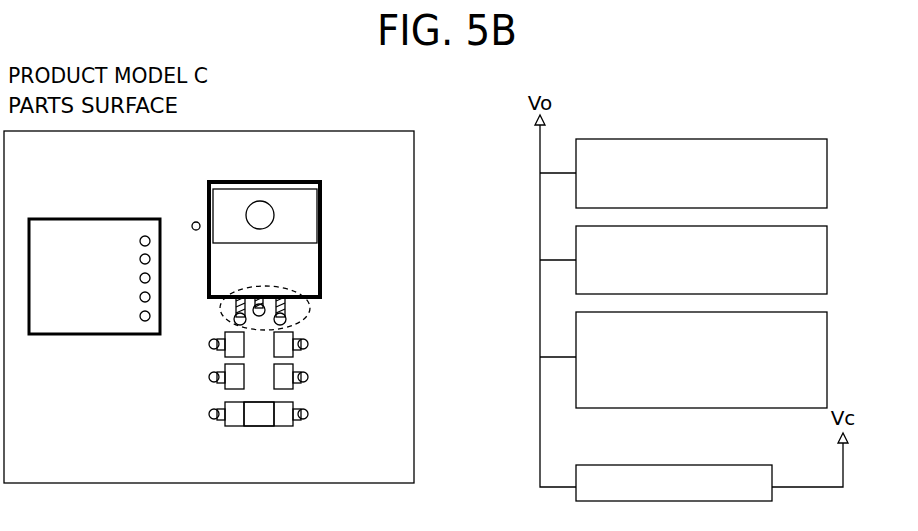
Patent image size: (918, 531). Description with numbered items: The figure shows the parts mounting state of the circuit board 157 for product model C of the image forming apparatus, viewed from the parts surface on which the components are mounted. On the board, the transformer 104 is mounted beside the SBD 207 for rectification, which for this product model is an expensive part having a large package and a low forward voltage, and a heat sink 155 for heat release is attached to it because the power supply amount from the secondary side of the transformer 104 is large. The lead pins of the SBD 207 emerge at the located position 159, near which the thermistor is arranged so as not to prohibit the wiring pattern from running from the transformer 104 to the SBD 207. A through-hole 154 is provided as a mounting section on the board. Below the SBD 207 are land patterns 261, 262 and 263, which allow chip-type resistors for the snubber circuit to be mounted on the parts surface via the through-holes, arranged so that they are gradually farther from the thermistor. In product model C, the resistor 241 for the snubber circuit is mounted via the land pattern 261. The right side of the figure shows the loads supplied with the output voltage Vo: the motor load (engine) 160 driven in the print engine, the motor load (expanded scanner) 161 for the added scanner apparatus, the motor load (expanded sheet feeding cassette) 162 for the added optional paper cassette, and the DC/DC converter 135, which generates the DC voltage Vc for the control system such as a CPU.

The transformer 104 is at (95, 237).
The through-hole 154 is at (192, 224).
The heat sink 155 is at (295, 229).
The SBD for rectification 207 is at (270, 182).
The circuit board 157 is at (414, 182).
The located position of the SBD 159 is at (308, 322).
The land pattern 263 is at (224, 334).
The land pattern 262 is at (224, 366).
The land pattern 261 is at (224, 403).
The resistor 241 is at (257, 427).
The motor load (engine) 160 is at (827, 173).
The motor load (expanded scanner) 161 is at (827, 260).
The motor load (expanded sheet feeding cassette) 162 is at (827, 353).
The DC/DC converter 135 is at (655, 464).